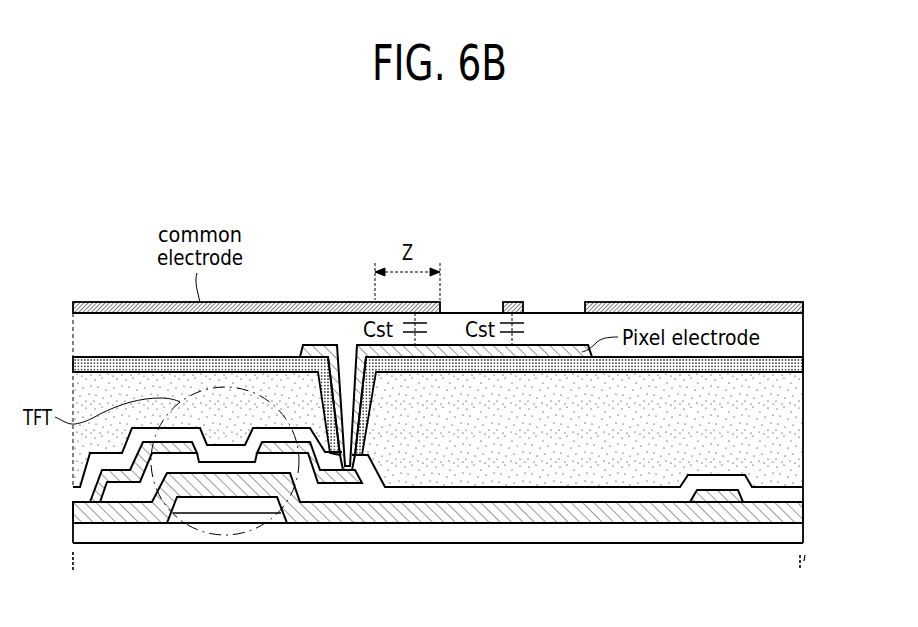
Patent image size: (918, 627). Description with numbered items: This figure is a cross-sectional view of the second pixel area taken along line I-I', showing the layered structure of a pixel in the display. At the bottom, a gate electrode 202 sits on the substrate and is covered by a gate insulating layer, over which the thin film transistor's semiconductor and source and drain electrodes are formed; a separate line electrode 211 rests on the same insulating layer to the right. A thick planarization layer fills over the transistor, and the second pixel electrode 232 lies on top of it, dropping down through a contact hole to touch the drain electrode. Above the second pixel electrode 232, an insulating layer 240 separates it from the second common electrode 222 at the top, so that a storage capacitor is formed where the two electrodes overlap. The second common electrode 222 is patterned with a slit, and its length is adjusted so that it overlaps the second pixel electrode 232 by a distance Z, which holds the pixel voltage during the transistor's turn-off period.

The gate electrode 202 is at (218, 503).
The line electrode 211 is at (710, 503).
The second common electrode 222 is at (502, 305).
The second pixel electrode 232 is at (455, 346).
The passivation layer 240 is at (780, 333).